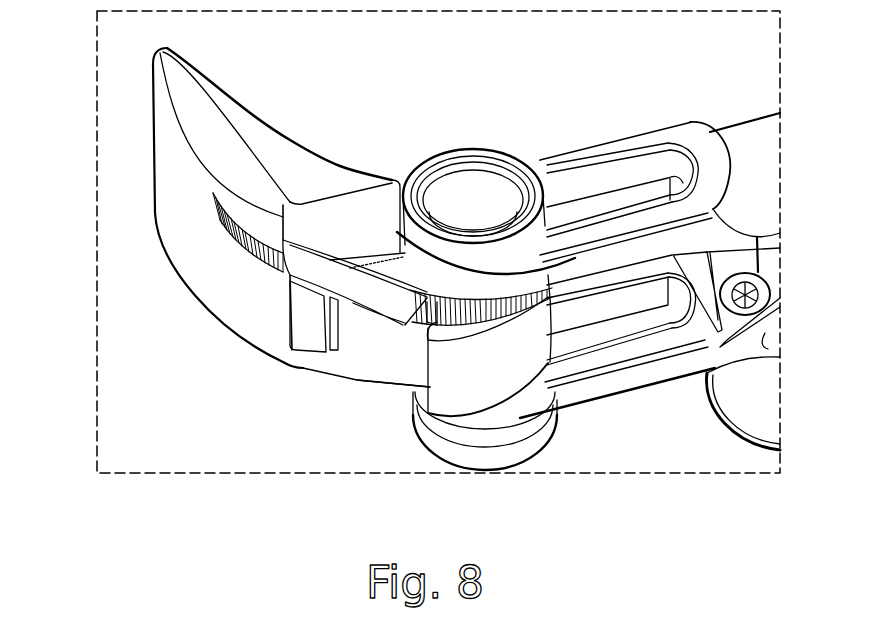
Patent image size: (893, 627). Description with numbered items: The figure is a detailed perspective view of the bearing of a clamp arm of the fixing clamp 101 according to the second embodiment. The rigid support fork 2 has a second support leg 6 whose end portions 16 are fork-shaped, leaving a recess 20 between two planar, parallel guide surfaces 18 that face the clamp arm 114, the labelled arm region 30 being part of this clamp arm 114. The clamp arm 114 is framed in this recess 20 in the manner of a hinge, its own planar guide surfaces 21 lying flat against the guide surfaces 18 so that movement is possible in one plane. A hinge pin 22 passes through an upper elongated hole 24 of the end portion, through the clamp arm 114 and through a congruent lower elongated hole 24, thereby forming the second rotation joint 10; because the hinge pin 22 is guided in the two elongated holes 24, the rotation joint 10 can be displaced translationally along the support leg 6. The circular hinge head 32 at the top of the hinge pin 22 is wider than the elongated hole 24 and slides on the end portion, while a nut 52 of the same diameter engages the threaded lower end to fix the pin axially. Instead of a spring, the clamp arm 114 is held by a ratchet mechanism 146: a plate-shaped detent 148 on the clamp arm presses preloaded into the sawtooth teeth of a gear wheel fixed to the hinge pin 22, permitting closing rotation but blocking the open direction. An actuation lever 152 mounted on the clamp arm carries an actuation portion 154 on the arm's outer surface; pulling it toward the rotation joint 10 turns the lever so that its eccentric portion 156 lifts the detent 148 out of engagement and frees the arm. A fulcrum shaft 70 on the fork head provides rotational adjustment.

The fixing clamp 101 is at (132, 66).
The pad 30 is at (224, 94).
The clamp arm 114 is at (239, 137).
The eccentric portion 156 is at (350, 260).
The actuation lever 152 is at (375, 260).
The hinge pin 22 is at (441, 149).
The hinge head 32 is at (477, 200).
The second rotation joint 10 is at (518, 146).
The support fork 2 is at (756, 112).
The second support leg 6 is at (673, 136).
The guide surfaces 18 is at (586, 200).
The elongated hole 24 is at (629, 203).
The end portions 16 is at (562, 392).
The guide surfaces 21 is at (414, 392).
The nut 52 is at (460, 456).
The detent 148 is at (379, 330).
The ratchet mechanism 146 is at (355, 290).
The actuation portion 154 is at (303, 312).
The recess 20 is at (699, 270).
The fulcrum shaft 70 is at (779, 452).